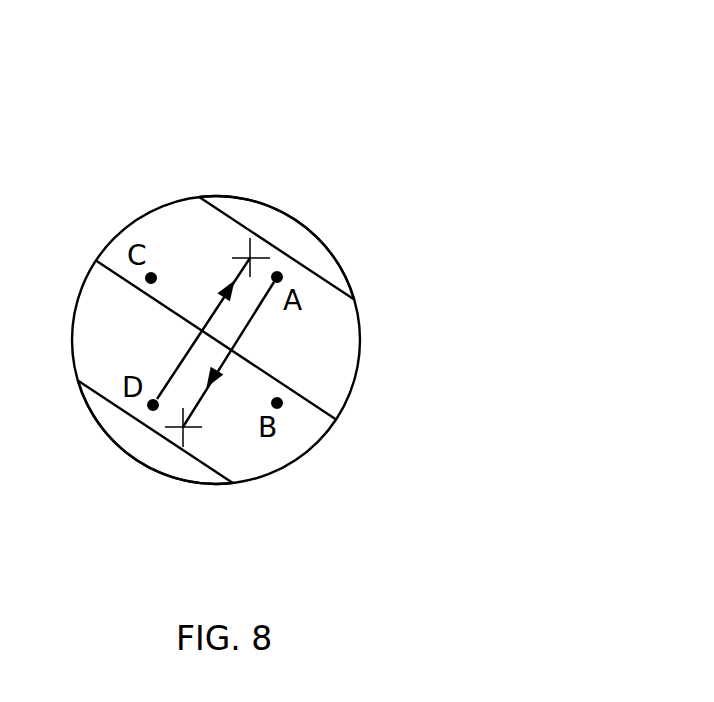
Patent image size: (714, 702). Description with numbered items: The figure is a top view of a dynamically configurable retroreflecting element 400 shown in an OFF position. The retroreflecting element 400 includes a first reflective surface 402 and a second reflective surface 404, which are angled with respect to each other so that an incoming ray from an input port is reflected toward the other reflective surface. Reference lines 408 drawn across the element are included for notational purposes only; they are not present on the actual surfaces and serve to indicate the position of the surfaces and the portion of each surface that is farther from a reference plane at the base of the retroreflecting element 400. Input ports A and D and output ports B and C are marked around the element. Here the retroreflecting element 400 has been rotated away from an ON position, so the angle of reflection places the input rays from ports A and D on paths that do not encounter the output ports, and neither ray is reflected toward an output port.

The retroreflecting element 400 is at (336, 145).
The first reflective surface 402 is at (168, 224).
The second reflective surface 404 is at (252, 465).
The reference lines 408 is at (316, 273).